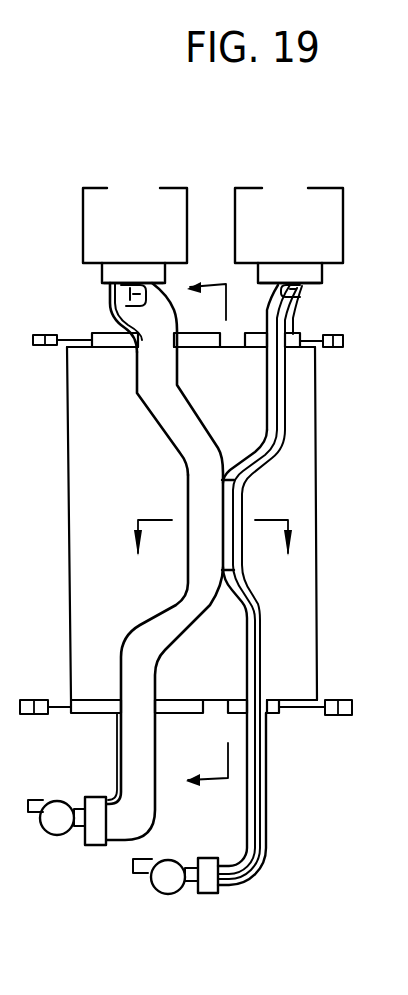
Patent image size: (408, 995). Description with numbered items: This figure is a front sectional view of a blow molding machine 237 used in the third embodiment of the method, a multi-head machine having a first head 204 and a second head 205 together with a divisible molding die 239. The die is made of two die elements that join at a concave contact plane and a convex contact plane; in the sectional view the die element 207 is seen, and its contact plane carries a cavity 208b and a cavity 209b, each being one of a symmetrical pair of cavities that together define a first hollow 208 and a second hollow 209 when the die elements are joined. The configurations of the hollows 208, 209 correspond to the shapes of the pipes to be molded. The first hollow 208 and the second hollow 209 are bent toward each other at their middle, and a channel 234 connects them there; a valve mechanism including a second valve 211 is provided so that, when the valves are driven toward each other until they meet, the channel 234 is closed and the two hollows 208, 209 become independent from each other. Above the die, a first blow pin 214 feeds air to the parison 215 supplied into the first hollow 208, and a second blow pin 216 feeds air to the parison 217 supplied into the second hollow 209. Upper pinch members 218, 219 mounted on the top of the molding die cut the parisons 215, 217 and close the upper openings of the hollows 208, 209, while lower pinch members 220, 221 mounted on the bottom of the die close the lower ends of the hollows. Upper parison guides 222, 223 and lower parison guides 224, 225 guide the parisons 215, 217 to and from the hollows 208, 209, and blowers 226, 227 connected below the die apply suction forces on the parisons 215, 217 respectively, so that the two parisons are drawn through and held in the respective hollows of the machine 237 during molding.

The first head 204 is at (182, 208).
The second head 205 is at (333, 207).
The die element 207 is at (318, 550).
The first hollow 208 is at (185, 438).
The cavity 208b is at (140, 408).
The second hollow 209 is at (290, 670).
The cavity 209b is at (290, 457).
The second valve 211 is at (228, 562).
The first blow pin 214 is at (108, 288).
The parison 215 is at (117, 296).
The second blow pin 216 is at (310, 288).
The parison 217 is at (304, 294).
The upper pinch member 218 is at (104, 345).
The upper pinch member 219 is at (300, 348).
The lower pinch member 220 is at (88, 714).
The lower pinch member 221 is at (277, 716).
The upper parison guide 222 is at (118, 322).
The upper parison guide 223 is at (296, 310).
The lower parison guide 224 is at (115, 752).
The lower parison guide 225 is at (270, 846).
The blower 226 is at (56, 835).
The blower 227 is at (161, 894).
The channel 234 is at (228, 498).
The blow molding machine 237 is at (296, 142).
The divisible molding die 239 is at (322, 431).